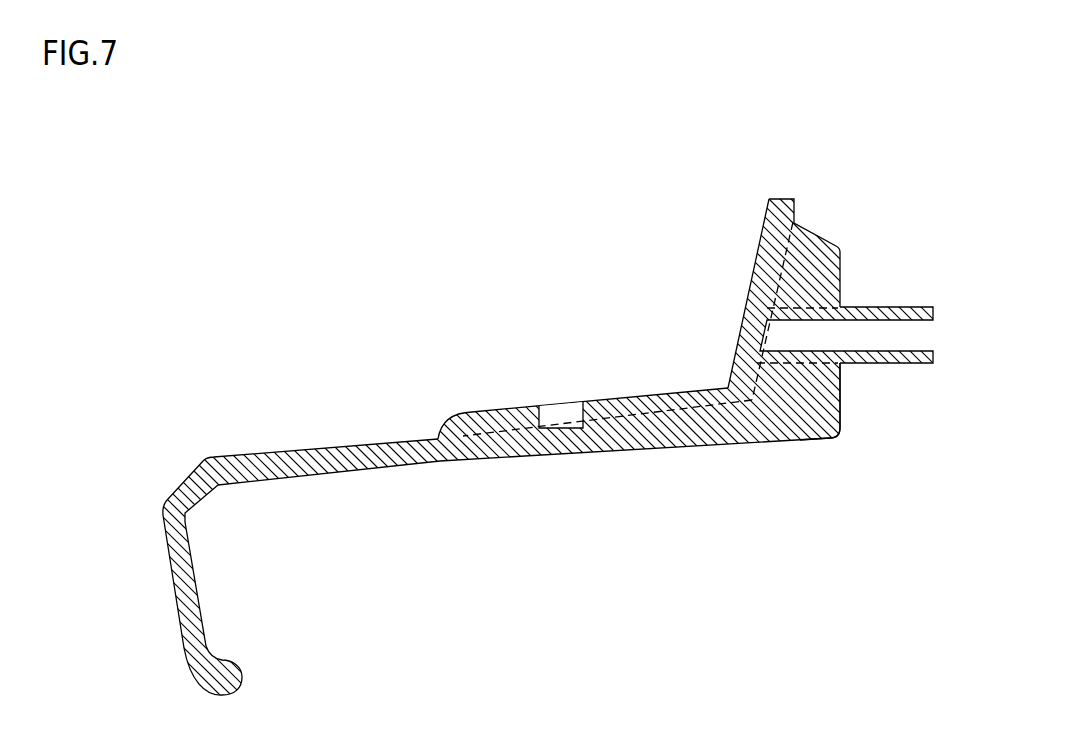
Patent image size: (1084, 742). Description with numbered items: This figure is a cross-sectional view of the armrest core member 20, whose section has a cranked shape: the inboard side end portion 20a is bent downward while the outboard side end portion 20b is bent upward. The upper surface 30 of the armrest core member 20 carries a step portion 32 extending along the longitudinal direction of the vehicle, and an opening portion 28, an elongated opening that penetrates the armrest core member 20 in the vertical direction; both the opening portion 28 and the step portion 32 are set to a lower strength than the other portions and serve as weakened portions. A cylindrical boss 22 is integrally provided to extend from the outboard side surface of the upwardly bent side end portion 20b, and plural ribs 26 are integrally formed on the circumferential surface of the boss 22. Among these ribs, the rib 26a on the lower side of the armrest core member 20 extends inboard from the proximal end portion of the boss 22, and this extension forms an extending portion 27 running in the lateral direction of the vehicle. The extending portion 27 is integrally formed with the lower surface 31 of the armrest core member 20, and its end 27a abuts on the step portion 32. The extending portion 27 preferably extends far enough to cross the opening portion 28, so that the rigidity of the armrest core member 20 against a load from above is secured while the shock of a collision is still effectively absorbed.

The armrest core member 20 is at (358, 443).
The inboard side end portion 20a is at (178, 582).
The outboard side end portion 20b is at (753, 277).
The boss 22 is at (886, 362).
The ribs 26 is at (820, 252).
The rib 26a is at (800, 397).
The extending portion 27 is at (662, 445).
The end of the extending portion 27a is at (467, 442).
The opening portion 28 is at (552, 413).
The upper surface 30 is at (625, 397).
The lower surface 31 is at (612, 428).
The step portion 32 is at (450, 422).